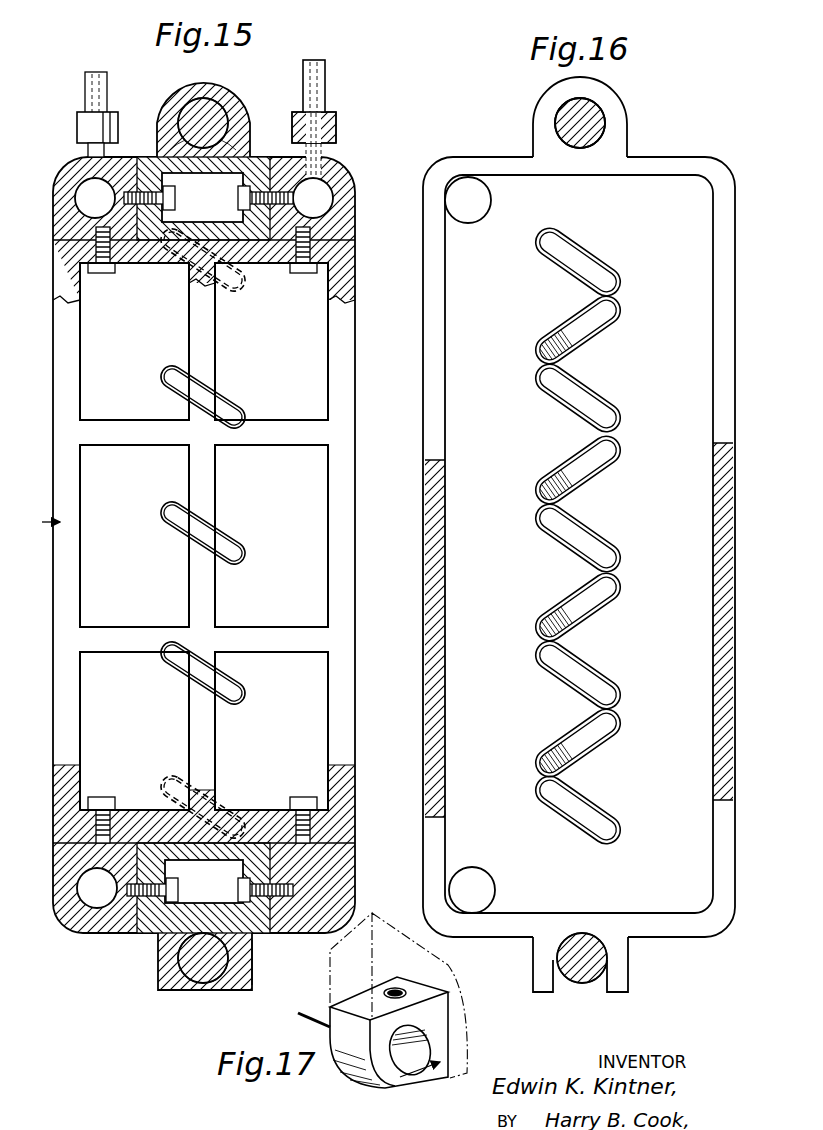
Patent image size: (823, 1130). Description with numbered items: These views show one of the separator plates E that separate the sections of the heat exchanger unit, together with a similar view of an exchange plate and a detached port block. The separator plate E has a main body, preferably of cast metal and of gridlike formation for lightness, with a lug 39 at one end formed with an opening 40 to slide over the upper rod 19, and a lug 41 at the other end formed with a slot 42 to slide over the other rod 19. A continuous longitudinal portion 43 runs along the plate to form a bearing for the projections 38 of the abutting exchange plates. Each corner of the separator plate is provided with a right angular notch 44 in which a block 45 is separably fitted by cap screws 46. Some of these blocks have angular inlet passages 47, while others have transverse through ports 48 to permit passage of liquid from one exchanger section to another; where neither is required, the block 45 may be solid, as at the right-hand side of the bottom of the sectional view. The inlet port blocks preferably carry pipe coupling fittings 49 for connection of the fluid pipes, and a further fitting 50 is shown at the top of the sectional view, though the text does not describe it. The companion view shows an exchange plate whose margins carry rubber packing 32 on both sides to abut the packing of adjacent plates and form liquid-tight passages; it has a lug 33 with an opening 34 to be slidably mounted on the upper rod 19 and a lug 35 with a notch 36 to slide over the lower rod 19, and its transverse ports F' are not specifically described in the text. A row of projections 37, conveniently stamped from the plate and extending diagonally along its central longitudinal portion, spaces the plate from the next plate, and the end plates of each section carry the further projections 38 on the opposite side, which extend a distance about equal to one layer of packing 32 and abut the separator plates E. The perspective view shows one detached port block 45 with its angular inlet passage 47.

In FIG. 15, the rod 19 is at (203, 984).
In FIG. 16, the rod 19 is at (566, 128).
In FIG. 15, the rubber packing 32 is at (320, 405).
In FIG. 16, the rubber packing 32 is at (440, 514).
In FIG. 16, the lug 33 is at (547, 91).
In FIG. 16, the opening 34 is at (558, 117).
In FIG. 16, the lug 35 is at (552, 974).
In FIG. 16, the notch 36 is at (556, 979).
In FIG. 15, the projections 37 is at (200, 284).
In FIG. 16, the projections 37 is at (572, 271).
In FIG. 16, the projections 38 is at (560, 318).
In FIG. 15, the lug 39 is at (241, 100).
In FIG. 15, the opening 40 is at (187, 88).
In FIG. 15, the lug 41 is at (165, 962).
In FIG. 15, the slot 42 is at (232, 984).
In FIG. 15, the continuous longitudinal portion 43 is at (212, 375).
In FIG. 15, the right angular notch 44 is at (348, 247).
In FIG. 15, the block 45 is at (352, 172).
In FIG. 17, the block 45 is at (360, 1074).
In FIG. 15, the cap screws 46 is at (238, 203).
In FIG. 15, the angular inlet passages 47 is at (82, 198).
In FIG. 17, the angular inlet passages 47 is at (400, 1078).
In FIG. 15, the transverse through ports 48 is at (82, 890).
In FIG. 15, the pipe coupling fittings 49 is at (86, 147).
In FIG. 15, the stud 50 is at (327, 70).
In FIG. 15, the separator plates E is at (46, 513).
In FIG. 16, the hole F' is at (472, 545).